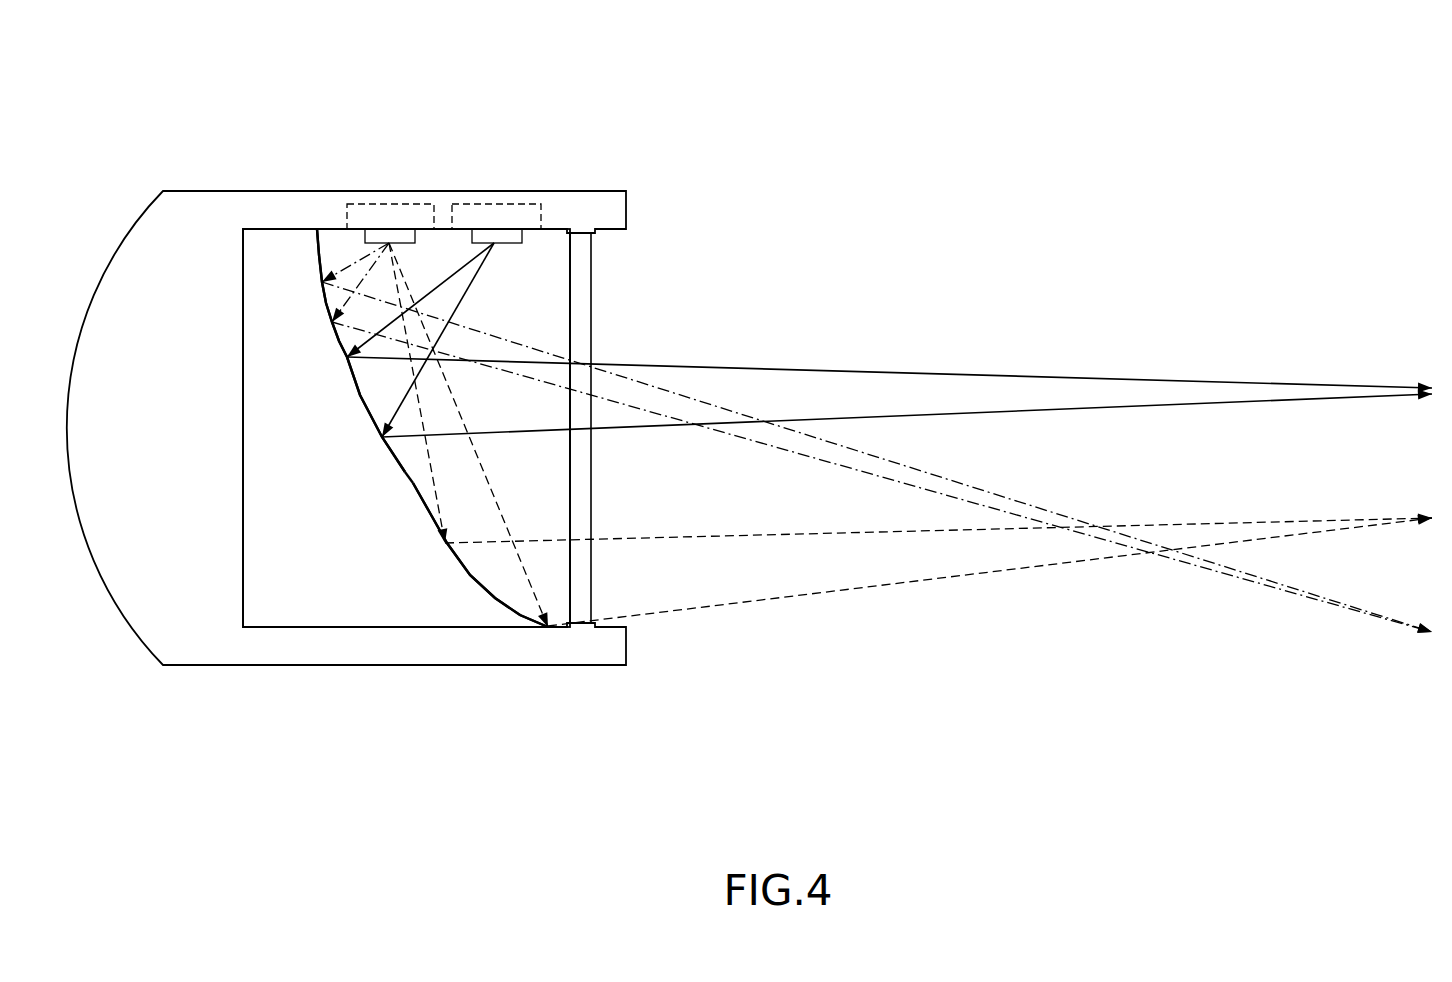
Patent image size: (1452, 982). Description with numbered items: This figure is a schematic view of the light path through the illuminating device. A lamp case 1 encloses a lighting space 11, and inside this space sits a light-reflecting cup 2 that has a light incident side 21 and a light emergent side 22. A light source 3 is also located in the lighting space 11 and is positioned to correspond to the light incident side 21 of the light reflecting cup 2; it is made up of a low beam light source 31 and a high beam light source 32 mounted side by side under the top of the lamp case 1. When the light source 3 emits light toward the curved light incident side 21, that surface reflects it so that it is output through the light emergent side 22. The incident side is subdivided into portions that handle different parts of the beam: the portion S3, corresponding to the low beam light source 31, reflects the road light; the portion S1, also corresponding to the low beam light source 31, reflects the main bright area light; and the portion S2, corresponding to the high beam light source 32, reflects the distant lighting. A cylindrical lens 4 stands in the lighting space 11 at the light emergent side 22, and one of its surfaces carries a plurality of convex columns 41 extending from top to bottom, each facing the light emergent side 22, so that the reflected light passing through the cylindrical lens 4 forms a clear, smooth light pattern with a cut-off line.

The lamp case 1 is at (612, 191).
The lighting space 11 is at (546, 254).
The light-reflecting cup 2 is at (378, 615).
The light incident side 21 is at (334, 234).
The light emergent side 22 is at (564, 451).
The light source 3 is at (444, 131).
The low beam light source 31 is at (390, 229).
The high beam light source 32 is at (494, 229).
The cylindrical lens 4 is at (628, 418).
The convex columns 41 is at (572, 331).
The portion S1 is at (427, 525).
The portion S2 is at (358, 405).
The portion S3 is at (333, 340).